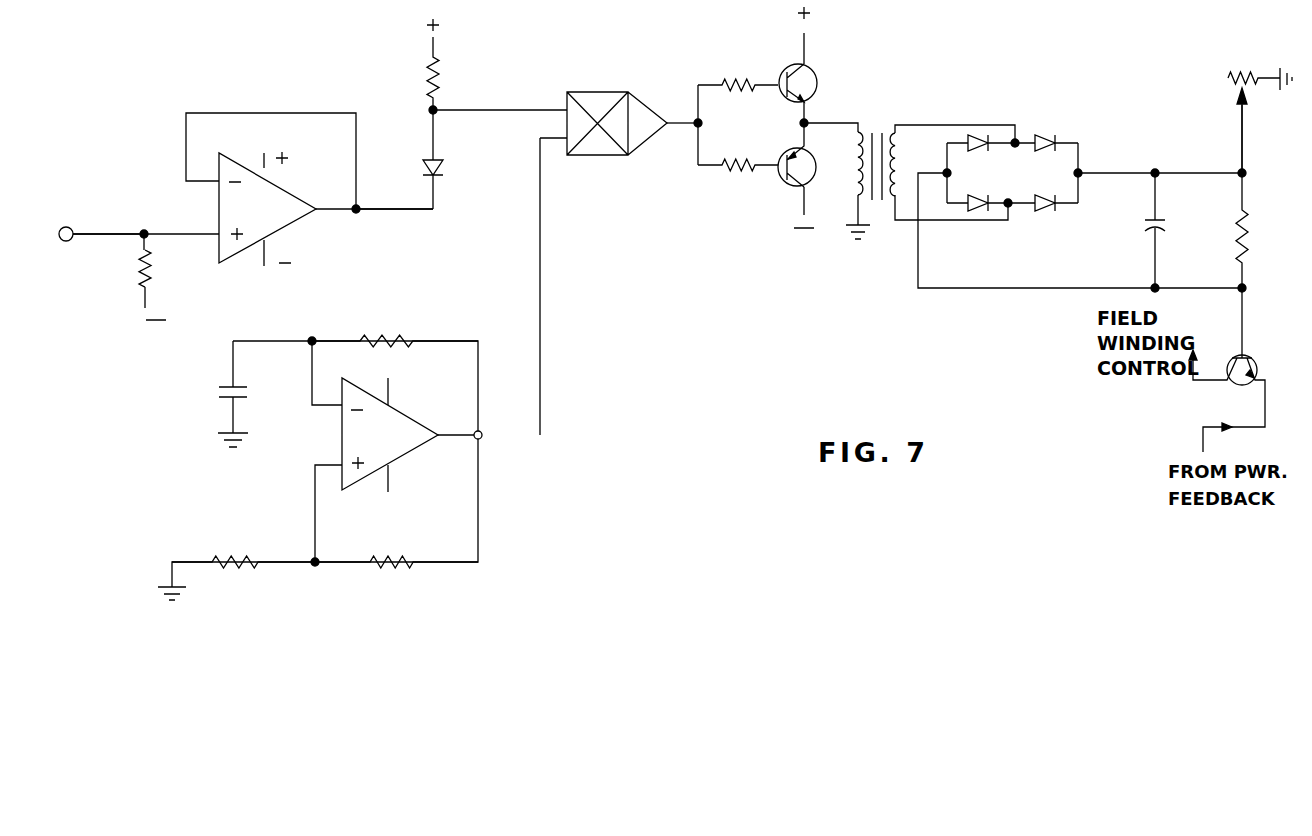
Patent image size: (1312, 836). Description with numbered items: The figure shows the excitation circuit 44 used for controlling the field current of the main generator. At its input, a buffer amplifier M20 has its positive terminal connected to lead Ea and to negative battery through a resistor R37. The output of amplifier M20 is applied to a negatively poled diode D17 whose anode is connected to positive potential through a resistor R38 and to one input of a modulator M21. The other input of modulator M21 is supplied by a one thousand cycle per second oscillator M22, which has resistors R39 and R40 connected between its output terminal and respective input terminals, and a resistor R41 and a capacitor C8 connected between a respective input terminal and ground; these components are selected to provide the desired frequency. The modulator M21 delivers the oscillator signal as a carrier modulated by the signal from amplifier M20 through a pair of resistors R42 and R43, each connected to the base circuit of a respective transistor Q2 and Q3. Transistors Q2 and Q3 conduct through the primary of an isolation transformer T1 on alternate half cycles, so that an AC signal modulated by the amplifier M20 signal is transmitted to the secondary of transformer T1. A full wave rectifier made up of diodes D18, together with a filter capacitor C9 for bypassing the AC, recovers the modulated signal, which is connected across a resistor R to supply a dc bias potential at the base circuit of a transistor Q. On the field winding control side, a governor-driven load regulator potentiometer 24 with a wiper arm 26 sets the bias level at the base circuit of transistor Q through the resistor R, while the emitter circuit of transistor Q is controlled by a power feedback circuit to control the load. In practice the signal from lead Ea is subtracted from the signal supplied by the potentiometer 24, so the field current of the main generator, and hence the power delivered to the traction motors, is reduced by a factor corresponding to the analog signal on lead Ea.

The lead Ea is at (118, 207).
The resistor R37 is at (150, 268).
The buffer amplifier M20 is at (275, 218).
The resistor R38 is at (430, 68).
The negatively poled diode D17 is at (440, 165).
The modulator M21 is at (617, 71).
The resistor R42 is at (752, 53).
The resistor R43 is at (745, 166).
The transistor Q2 is at (813, 72).
The transistor Q3 is at (790, 188).
The isolation transformer T1 is at (878, 127).
The diodes D18 is at (1038, 196).
The filter capacitor C9 is at (1147, 231).
The resistor R is at (1248, 236).
The load regulator potentiometer 24 is at (1238, 70).
The wiper arm 26 is at (1242, 130).
The transistor Q is at (1258, 370).
The capacitor C8 is at (215, 394).
The resistor R39 is at (417, 314).
The oscillator M22 is at (403, 449).
The resistor R41 is at (262, 533).
The resistor R40 is at (388, 560).
The excitation circuit 44 is at (895, 363).